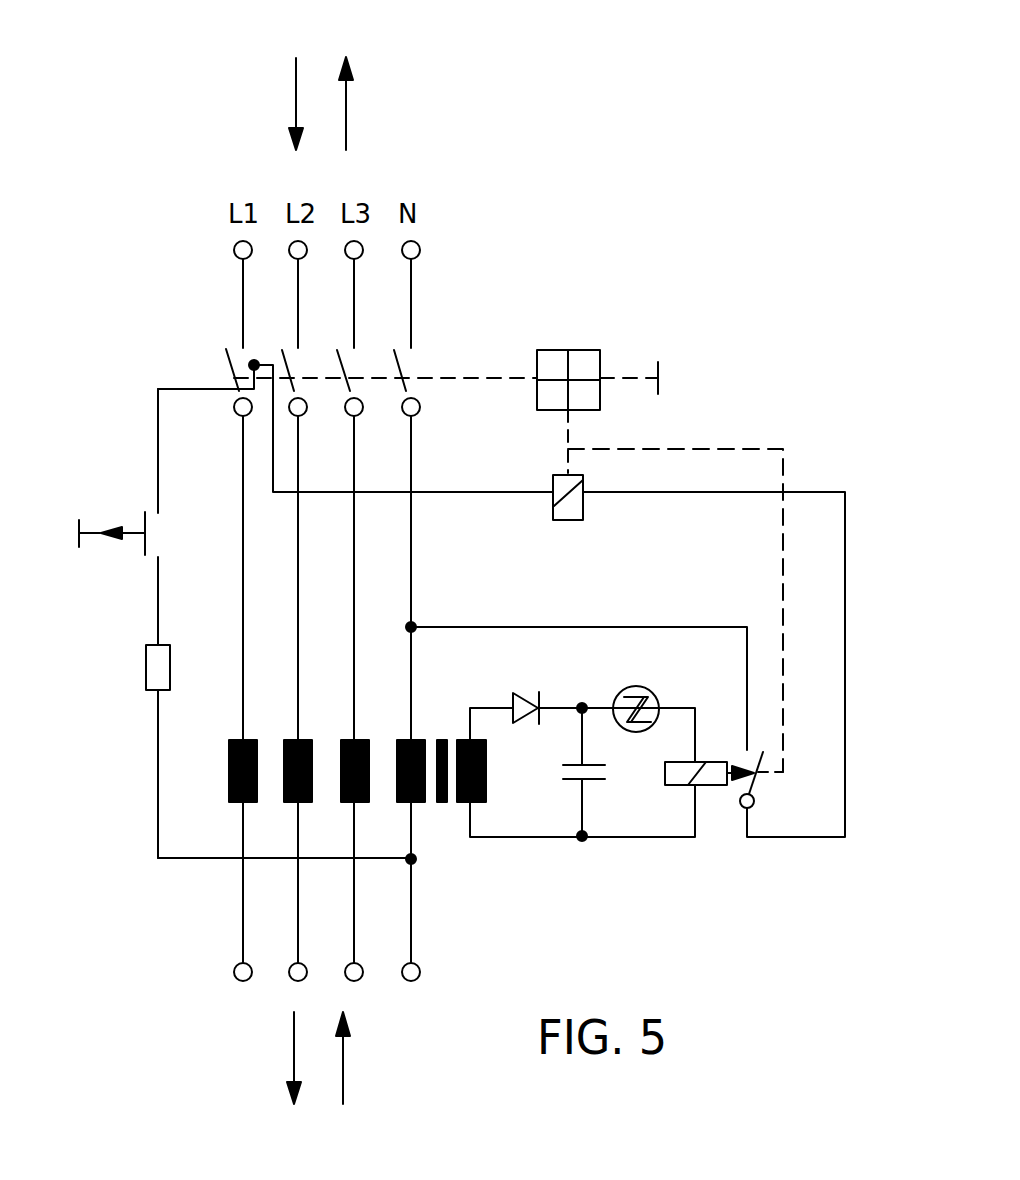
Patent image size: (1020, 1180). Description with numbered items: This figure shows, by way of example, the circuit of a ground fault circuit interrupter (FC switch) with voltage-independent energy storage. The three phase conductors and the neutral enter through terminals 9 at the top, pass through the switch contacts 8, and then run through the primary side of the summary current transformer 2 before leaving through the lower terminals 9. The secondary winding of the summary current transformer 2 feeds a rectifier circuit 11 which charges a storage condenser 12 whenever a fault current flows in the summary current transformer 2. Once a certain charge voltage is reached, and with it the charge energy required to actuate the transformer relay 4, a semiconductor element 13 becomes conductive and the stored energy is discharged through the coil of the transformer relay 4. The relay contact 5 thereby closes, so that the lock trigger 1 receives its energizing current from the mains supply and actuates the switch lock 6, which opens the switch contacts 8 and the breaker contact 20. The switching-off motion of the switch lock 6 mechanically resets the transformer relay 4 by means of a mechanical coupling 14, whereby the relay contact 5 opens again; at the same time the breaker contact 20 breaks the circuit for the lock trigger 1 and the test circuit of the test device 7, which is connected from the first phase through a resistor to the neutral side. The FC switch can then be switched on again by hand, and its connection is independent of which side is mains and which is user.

The lock trigger 1 is at (583, 483).
The summary current transformer 2 is at (228, 763).
The transformer relay 4 is at (713, 786).
The relay contact 5 is at (750, 797).
The switch lock 6 is at (582, 349).
The test device 7 is at (115, 541).
The switch contacts 8 is at (228, 364).
The terminals 9 is at (420, 249).
The rectifier circuit 11 is at (523, 724).
The storage condenser 12 is at (593, 785).
The semiconductor element 13 is at (640, 733).
The mechanical coupling 14 is at (783, 649).
The breaker contact 20 is at (250, 362).